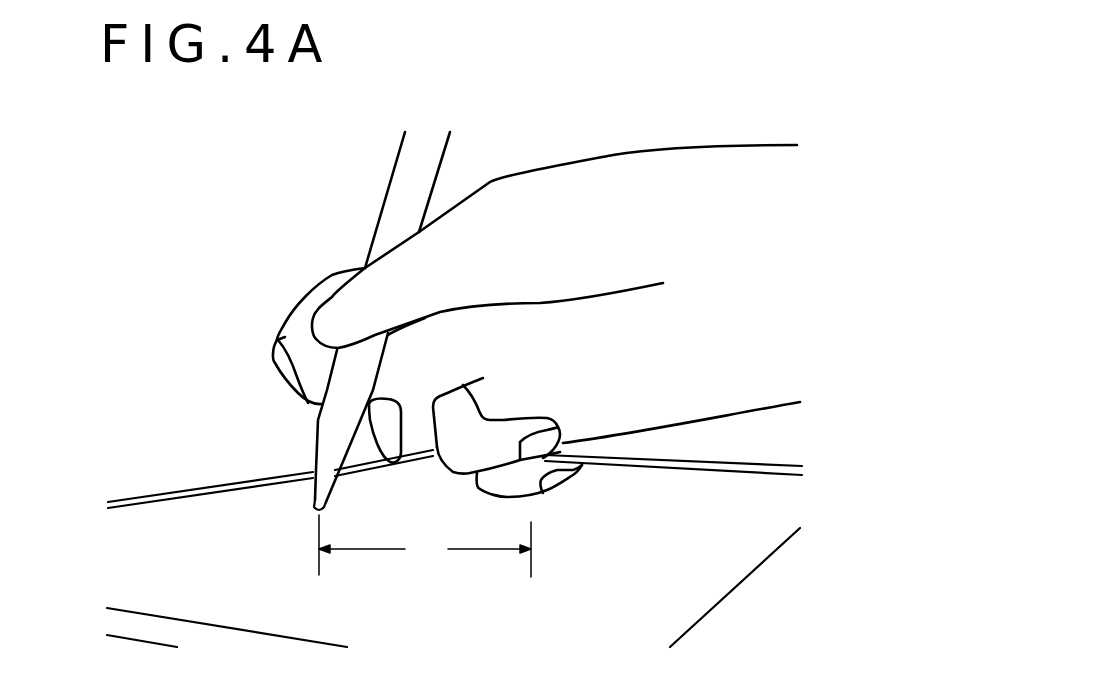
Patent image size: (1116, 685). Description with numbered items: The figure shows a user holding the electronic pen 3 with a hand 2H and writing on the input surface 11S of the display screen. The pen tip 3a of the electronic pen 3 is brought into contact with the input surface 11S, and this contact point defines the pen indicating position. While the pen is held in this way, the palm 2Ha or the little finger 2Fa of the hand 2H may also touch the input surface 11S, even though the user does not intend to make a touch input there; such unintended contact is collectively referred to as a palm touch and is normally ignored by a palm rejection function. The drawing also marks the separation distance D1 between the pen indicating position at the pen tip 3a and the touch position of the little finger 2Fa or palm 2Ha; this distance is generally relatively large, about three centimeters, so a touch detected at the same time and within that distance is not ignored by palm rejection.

The electronic pen 3 is at (331, 321).
The pen tip 3a is at (313, 503).
The hand 2H is at (552, 327).
The palm 2Ha is at (760, 408).
The little finger 2Fa is at (528, 485).
The input surface 11S is at (180, 520).
The separation distance D1 is at (425, 546).